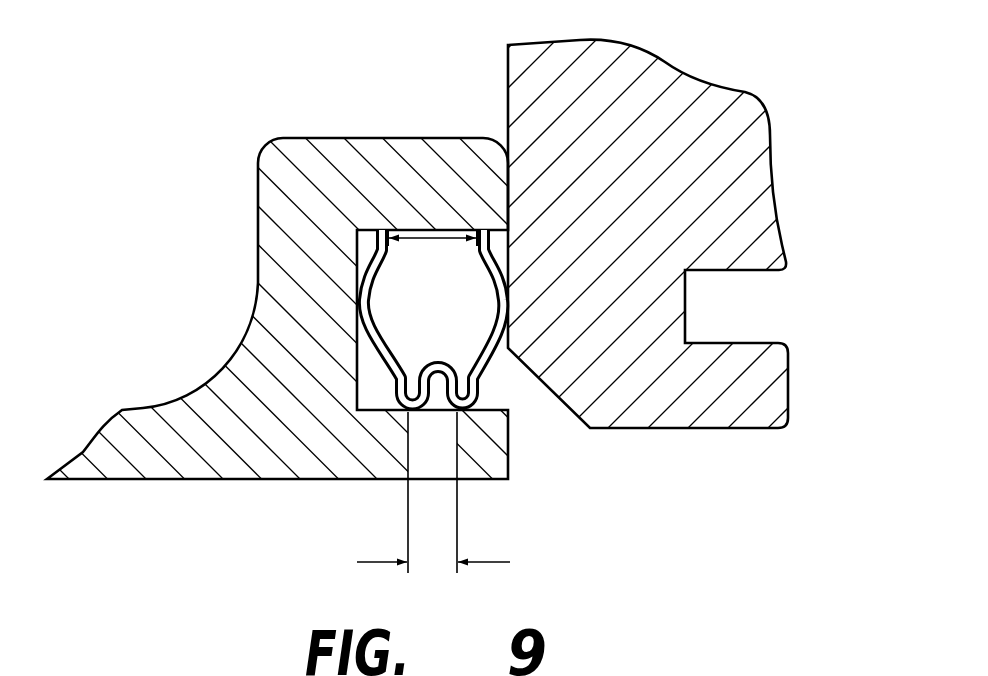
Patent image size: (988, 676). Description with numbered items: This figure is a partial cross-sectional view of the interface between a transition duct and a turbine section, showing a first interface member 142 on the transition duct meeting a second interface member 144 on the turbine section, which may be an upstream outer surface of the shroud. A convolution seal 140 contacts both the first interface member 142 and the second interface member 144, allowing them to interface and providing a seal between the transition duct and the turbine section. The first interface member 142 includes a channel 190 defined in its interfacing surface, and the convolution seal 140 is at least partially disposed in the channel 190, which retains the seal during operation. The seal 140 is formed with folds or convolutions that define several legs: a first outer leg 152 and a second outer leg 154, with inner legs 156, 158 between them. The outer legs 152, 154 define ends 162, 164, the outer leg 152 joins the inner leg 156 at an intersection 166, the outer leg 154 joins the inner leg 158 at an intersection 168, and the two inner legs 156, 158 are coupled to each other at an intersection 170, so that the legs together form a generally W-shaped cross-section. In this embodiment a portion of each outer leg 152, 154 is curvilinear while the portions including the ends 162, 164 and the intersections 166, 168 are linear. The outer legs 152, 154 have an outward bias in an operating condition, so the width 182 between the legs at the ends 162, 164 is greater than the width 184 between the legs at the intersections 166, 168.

The convolution seal 140 is at (440, 268).
The first interface member 142 is at (213, 350).
The second interface member 144 is at (492, 108).
The outer leg 152 is at (366, 357).
The outer leg 154 is at (503, 338).
The inner leg 156 is at (425, 415).
The inner leg 158 is at (442, 415).
The end 162 is at (372, 232).
The end 164 is at (492, 234).
The intersection 166 is at (405, 420).
The intersection 168 is at (460, 418).
The intersection 170 is at (432, 362).
The width 182 is at (428, 232).
The width 184 is at (357, 562).
The channel 190 is at (517, 393).